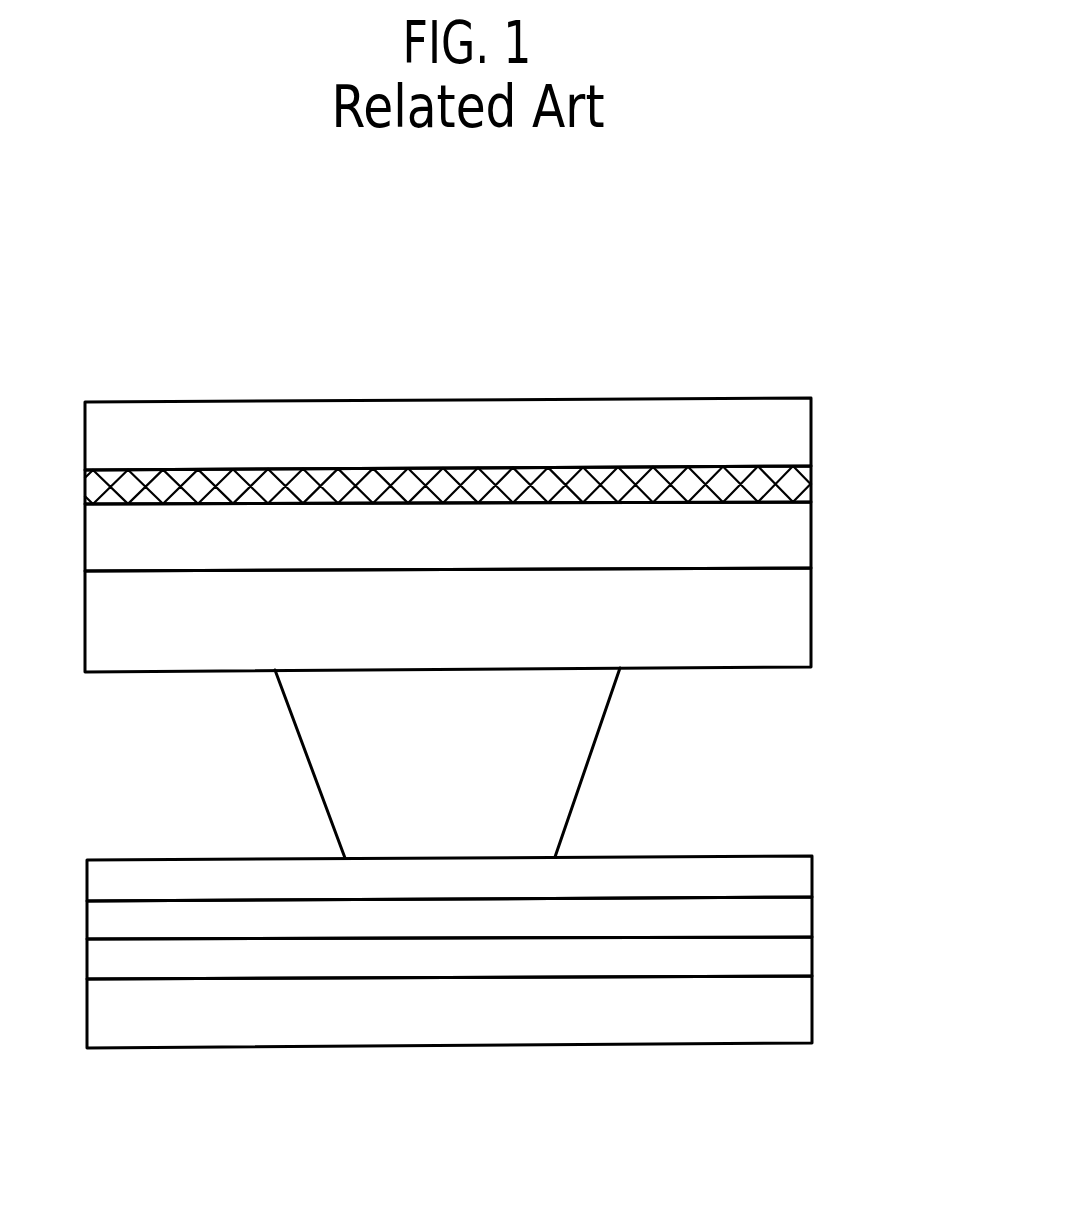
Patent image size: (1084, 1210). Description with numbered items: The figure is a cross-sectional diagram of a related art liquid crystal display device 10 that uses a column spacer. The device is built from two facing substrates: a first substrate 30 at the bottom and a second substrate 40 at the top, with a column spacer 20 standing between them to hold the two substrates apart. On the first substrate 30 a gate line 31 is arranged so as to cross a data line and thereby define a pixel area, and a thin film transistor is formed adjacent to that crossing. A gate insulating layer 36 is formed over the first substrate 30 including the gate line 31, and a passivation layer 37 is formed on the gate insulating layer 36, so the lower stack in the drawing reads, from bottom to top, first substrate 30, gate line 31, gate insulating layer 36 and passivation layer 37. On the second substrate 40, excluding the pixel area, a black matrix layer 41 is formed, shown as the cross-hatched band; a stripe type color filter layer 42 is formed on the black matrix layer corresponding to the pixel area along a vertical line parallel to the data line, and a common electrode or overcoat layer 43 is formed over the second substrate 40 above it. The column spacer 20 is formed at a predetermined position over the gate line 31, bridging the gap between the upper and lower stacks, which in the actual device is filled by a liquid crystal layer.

The liquid crystal display device 10 is at (786, 314).
The column spacer 20 is at (575, 767).
The first substrate 30 is at (797, 1012).
The gate line 31 is at (797, 958).
The gate insulating layer 36 is at (797, 917).
The passivation layer 37 is at (797, 877).
The second substrate 40 is at (791, 438).
The black matrix layer 41 is at (791, 490).
The stripe type color filter layer 42 is at (791, 547).
The common electrode or overcoat layer 43 is at (791, 625).